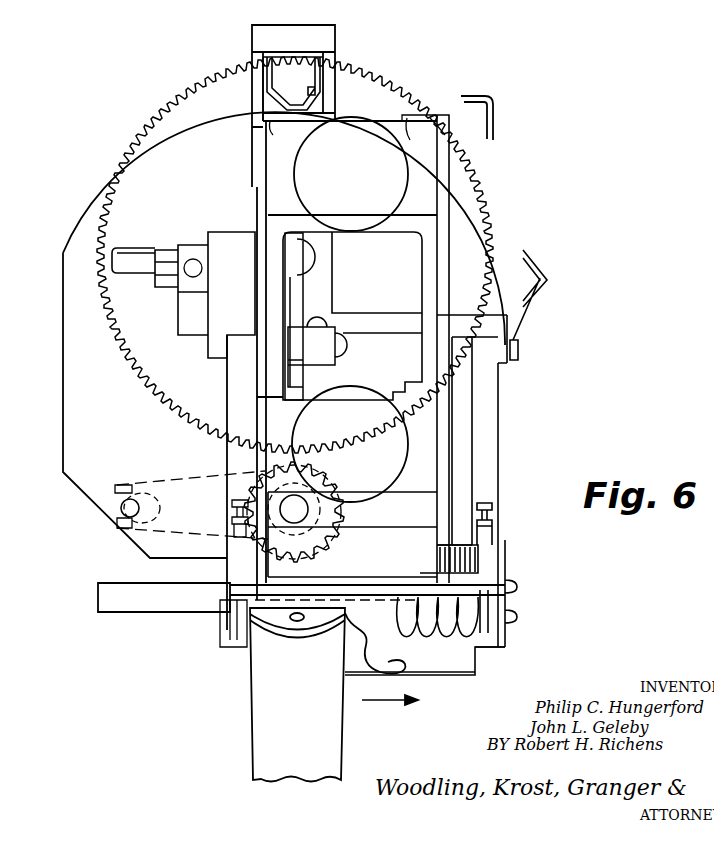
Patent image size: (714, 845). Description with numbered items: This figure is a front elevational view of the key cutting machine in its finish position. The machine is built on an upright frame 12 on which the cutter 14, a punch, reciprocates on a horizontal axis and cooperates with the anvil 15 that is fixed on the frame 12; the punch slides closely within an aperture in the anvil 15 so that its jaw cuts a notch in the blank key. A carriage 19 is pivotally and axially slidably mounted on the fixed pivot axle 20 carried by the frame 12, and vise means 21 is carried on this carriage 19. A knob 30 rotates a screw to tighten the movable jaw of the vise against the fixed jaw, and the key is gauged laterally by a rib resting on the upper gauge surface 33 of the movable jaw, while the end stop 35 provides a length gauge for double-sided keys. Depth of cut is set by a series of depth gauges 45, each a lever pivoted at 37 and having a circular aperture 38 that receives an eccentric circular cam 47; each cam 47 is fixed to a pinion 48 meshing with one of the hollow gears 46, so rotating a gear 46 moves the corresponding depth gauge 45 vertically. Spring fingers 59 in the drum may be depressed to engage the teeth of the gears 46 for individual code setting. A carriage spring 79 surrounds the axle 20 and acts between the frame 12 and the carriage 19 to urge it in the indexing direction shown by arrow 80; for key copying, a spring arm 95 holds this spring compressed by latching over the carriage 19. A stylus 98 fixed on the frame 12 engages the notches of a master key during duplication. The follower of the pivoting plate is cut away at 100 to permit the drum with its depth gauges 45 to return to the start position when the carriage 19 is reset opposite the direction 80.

The frame 12 is at (260, 25).
The cutter 14 is at (304, 77).
The anvil 15 is at (267, 72).
The gears 46 is at (365, 70).
The end stop 35 is at (433, 113).
The upper gauge surface 33 is at (353, 138).
The knob 30 is at (366, 179).
The vise means 21 is at (427, 208).
The spring fingers 59 is at (540, 272).
The stylus 98 is at (302, 378).
The pinions 48 is at (340, 472).
The cams 47 is at (350, 510).
The circular aperture 38 is at (294, 512).
The pivot 37 is at (117, 510).
The depth gauges 45 is at (328, 566).
The cut away 100 is at (377, 633).
The carriage 19 is at (498, 460).
The pivot axle 20 is at (177, 613).
The spring arm 95 is at (393, 650).
The carriage spring 79 is at (443, 627).
The arrow 80 is at (387, 703).